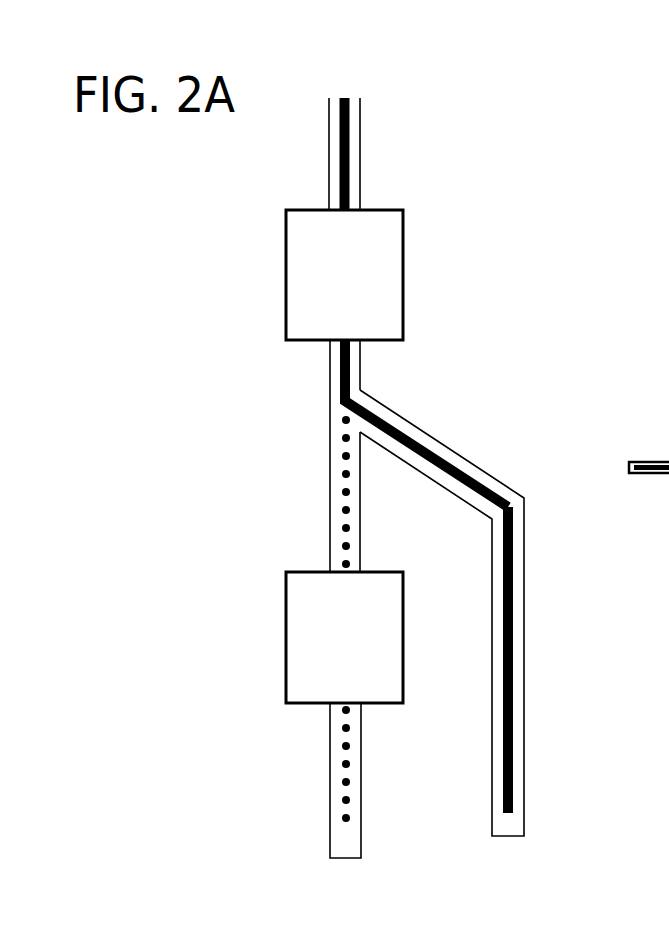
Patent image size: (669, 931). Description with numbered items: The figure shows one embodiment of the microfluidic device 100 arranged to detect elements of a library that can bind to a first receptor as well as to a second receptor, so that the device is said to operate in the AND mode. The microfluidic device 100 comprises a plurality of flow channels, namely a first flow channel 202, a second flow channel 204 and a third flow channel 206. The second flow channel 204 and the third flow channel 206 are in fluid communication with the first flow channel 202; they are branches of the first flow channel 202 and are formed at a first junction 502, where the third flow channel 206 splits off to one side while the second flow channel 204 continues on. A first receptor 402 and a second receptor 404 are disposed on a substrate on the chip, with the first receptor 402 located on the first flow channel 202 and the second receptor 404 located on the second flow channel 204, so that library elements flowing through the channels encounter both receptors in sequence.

The microfluidic device 100 is at (557, 190).
The first flow channel 202 is at (360, 140).
The second flow channel 204 is at (332, 528).
The third flow channel 206 is at (525, 604).
The first receptor 402 is at (383, 290).
The second receptor 404 is at (308, 637).
The first junction 502 is at (342, 398).